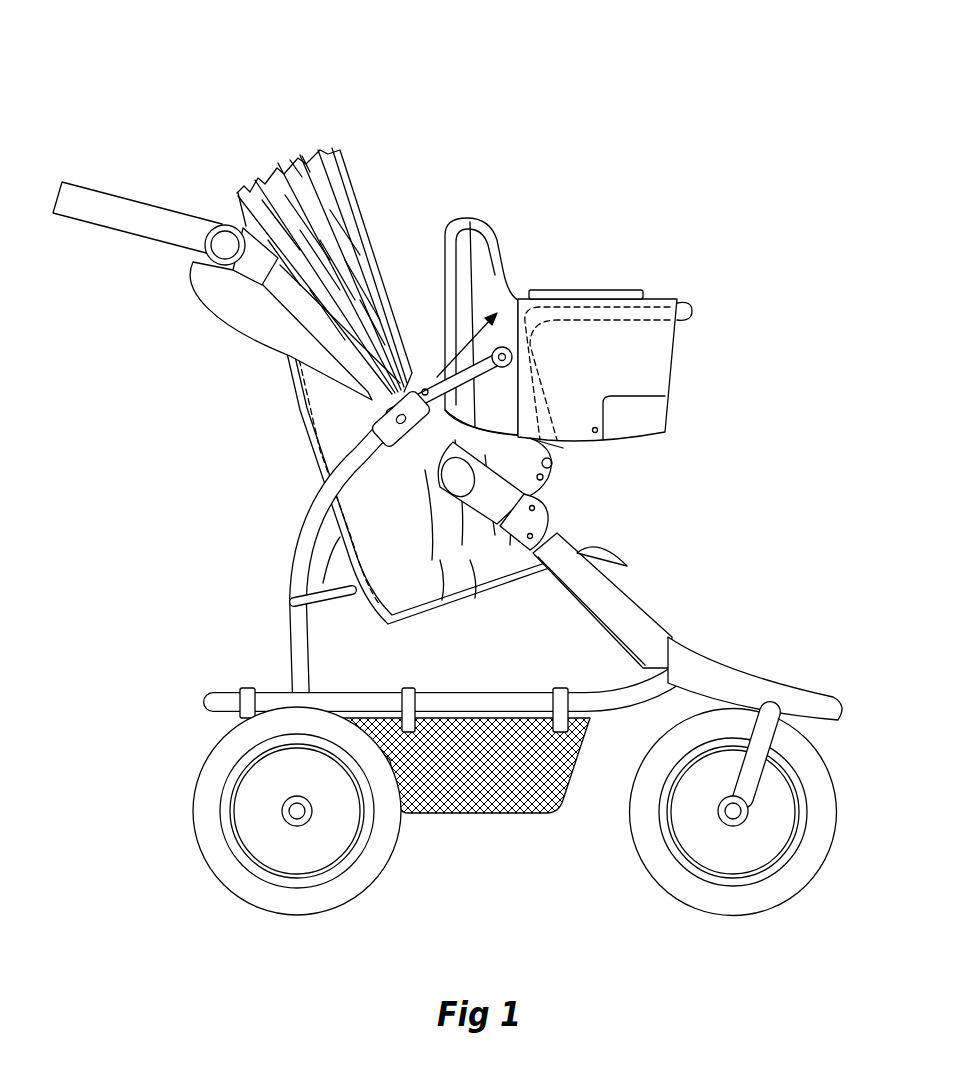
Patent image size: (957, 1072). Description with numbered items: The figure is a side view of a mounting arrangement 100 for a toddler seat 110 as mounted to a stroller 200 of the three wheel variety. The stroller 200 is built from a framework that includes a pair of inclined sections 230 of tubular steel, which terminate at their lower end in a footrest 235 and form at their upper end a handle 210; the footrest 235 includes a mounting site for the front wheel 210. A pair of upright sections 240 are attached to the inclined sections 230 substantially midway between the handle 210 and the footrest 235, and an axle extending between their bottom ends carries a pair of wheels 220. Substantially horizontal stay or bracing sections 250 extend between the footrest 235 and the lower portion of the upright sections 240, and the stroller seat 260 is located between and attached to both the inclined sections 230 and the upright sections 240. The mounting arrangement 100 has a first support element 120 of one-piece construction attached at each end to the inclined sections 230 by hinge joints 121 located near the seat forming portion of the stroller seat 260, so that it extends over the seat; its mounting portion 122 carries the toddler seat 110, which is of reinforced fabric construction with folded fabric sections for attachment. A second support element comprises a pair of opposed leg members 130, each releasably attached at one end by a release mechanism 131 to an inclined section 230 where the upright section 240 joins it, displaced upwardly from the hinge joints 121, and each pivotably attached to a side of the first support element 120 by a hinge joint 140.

The stroller 200 is at (152, 172).
The mounting arrangement 100 is at (420, 340).
The toddler seat 110 is at (614, 292).
The first support element 120 is at (560, 448).
The hinge joints 121 is at (550, 479).
The mounting portion 122 is at (688, 305).
The leg members 130 is at (444, 300).
The release mechanism 131 is at (400, 397).
The hinge joint 140 is at (530, 292).
The handle / front wheel 210 is at (85, 207).
The wheels 220 is at (208, 815).
The inclined sections 230 is at (630, 611).
The footrest 235 is at (752, 688).
The upright sections 240 is at (300, 583).
The stay or bracing sections 250 is at (502, 705).
The stroller seat 260 is at (310, 465).